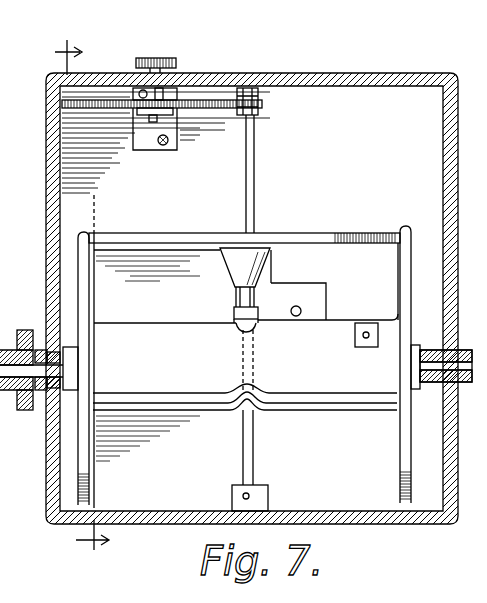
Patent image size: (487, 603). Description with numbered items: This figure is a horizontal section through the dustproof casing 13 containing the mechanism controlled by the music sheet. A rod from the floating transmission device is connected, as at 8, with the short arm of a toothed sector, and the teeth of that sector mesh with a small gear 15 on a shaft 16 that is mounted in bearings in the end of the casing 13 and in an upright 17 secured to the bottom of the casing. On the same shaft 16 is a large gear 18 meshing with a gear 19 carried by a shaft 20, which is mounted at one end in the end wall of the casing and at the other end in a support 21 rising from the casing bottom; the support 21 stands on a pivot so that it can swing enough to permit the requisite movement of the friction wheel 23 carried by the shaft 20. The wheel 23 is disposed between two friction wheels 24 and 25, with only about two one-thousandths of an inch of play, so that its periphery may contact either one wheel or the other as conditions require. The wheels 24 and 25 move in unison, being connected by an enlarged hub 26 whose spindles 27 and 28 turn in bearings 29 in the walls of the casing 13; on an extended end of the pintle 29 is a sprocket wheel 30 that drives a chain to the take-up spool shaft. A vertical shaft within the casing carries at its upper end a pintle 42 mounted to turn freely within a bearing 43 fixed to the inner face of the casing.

The connection point 8 is at (82, 293).
The dustproof casing 13 is at (399, 73).
The small gear 15 is at (168, 60).
The shaft 16 is at (160, 95).
The upright 17 is at (147, 120).
The large gear 18 is at (62, 118).
The gear 19 is at (262, 108).
The shaft 20 is at (254, 153).
The support 21 is at (262, 312).
The friction wheel 23 is at (328, 233).
The friction wheel 24 is at (400, 280).
The friction wheel 25 is at (82, 303).
The enlarged hub 26 is at (245, 395).
The spindle 27 is at (435, 366).
The spindle 28 is at (40, 348).
The bearing 29 is at (38, 392).
The sprocket wheel 30 is at (20, 336).
The pintle 42 is at (262, 490).
The bearing 43 is at (268, 497).